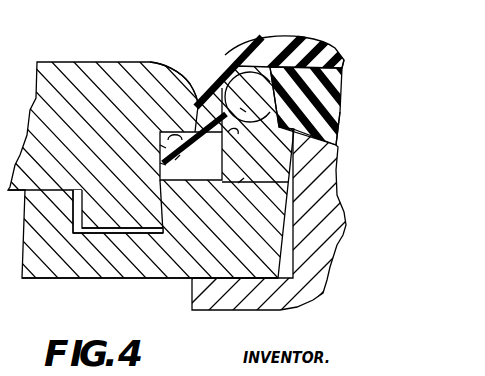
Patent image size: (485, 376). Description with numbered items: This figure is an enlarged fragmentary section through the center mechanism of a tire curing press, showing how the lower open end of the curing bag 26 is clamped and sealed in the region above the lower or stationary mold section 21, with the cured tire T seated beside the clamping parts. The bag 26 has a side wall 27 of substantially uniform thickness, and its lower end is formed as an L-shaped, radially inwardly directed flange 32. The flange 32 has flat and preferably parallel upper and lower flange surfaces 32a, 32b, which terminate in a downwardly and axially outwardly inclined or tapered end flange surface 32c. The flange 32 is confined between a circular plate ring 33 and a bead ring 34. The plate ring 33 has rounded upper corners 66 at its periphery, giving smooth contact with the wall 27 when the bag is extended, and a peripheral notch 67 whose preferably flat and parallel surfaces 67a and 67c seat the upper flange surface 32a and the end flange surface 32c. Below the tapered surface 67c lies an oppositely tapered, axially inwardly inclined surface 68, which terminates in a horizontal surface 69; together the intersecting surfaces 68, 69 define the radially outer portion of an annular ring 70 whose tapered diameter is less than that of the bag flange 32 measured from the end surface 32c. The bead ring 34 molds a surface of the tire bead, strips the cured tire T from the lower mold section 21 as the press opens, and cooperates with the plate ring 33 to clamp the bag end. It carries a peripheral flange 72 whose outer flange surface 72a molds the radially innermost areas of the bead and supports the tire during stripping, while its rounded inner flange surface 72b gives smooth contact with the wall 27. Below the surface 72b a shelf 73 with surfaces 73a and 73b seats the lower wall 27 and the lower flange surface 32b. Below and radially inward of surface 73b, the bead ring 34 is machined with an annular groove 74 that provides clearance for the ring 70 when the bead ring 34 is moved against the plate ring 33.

The lower mold section 21 is at (300, 190).
The bag 26 is at (344, 68).
The side wall 27 is at (305, 39).
The flange 32 is at (162, 92).
The upper flange surface 32a is at (158, 139).
The lower flange surface 32b is at (156, 167).
The end flange surface 32c is at (156, 147).
The plate ring 33 is at (68, 78).
The bead ring 34 is at (92, 272).
The rounded upper corners 66 is at (188, 85).
The notch 67 is at (200, 93).
The notch surface 67a is at (178, 150).
The tapered ring surface 67c is at (168, 184).
The oppositely tapered surface 68 is at (165, 210).
The horizontal surface 69 is at (122, 233).
The annular ring 70 is at (165, 229).
The peripheral flange 72 is at (260, 70).
The outer flange surface 72a is at (243, 101).
The rounded inner flange surface 72b is at (238, 117).
The shelf 73 is at (246, 181).
The shelf surface 73a is at (233, 136).
The shelf surface 73b is at (238, 183).
The annular groove 74 is at (167, 236).
The tire T is at (334, 109).